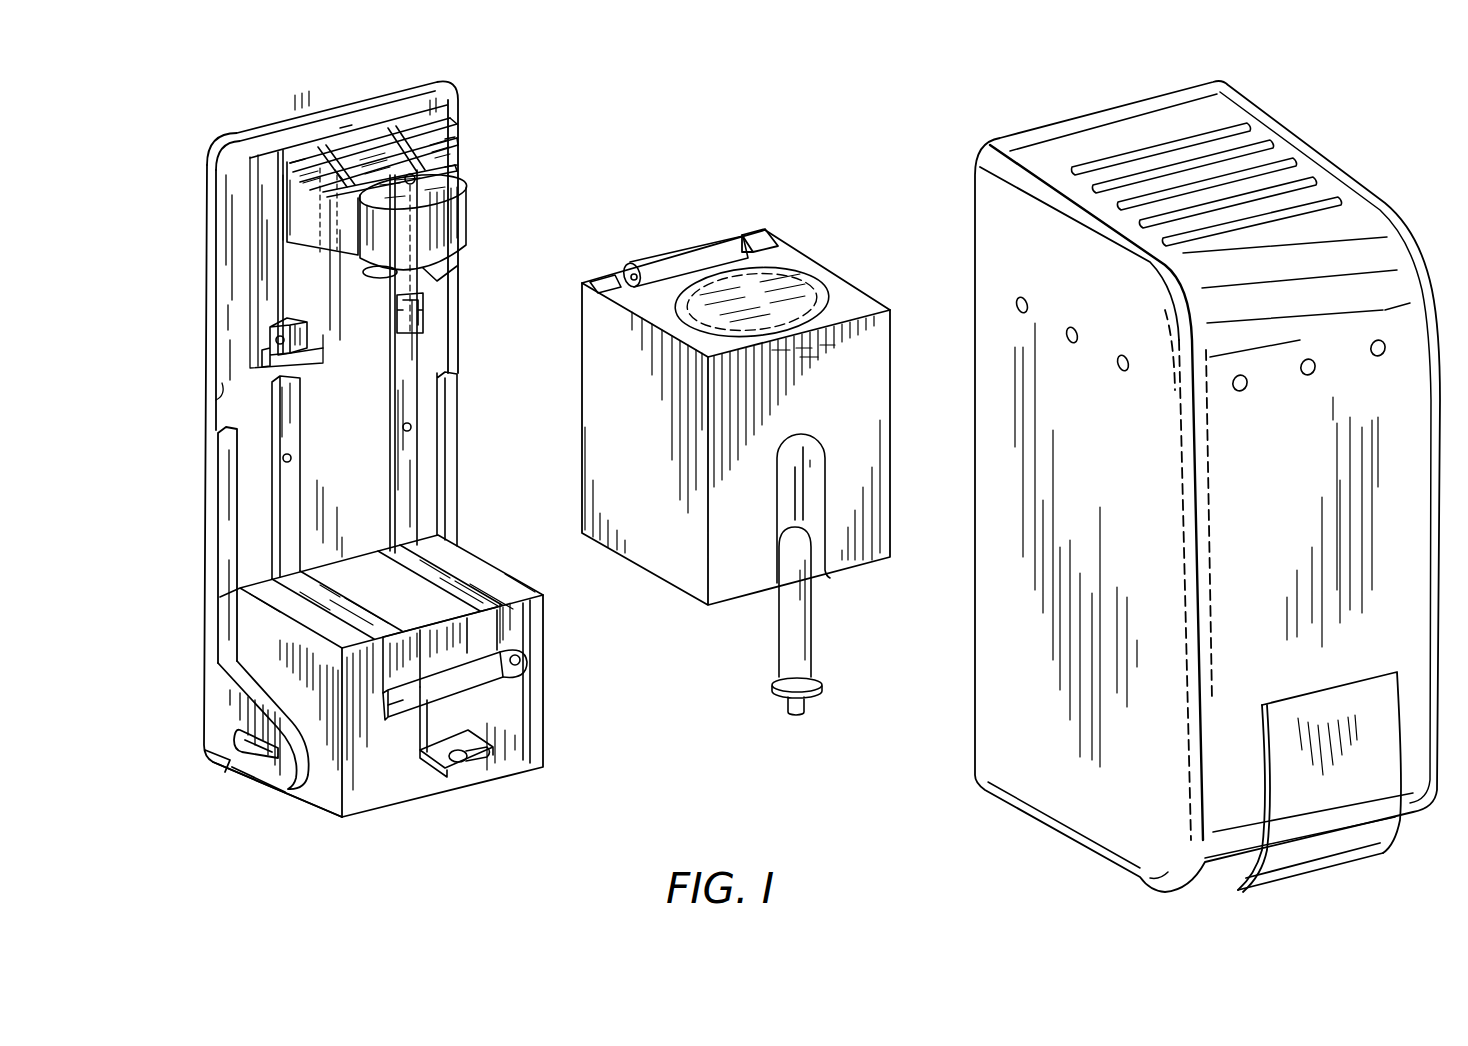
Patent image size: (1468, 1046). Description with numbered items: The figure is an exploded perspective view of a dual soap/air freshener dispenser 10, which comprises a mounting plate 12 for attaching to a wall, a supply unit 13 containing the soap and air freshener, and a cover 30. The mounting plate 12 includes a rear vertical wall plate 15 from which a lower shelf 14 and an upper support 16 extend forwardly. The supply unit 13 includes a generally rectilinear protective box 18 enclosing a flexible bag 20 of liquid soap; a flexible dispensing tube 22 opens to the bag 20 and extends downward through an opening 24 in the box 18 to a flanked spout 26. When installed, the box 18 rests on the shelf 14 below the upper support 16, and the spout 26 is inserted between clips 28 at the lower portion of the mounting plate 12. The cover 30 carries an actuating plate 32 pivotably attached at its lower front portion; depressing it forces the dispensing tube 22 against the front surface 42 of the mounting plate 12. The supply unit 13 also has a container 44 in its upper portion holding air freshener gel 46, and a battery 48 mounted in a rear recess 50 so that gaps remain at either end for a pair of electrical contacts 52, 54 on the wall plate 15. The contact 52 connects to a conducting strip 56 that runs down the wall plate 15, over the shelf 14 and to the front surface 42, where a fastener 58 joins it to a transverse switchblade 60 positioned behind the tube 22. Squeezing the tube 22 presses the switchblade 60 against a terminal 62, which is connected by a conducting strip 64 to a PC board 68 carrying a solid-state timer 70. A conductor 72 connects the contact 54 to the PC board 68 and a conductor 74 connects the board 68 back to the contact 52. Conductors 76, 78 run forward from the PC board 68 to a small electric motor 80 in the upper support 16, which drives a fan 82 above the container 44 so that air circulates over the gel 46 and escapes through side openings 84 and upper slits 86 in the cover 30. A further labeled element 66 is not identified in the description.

The dual soap/air freshener dispenser 10 is at (378, 870).
The mounting plate 12 is at (207, 497).
The supply unit 13 is at (811, 230).
The lower shelf 14 is at (363, 563).
The rear vertical wall plate 15 is at (222, 387).
The upper support 16 is at (392, 135).
The protective box 18 is at (577, 413).
The flexible bag 20 is at (795, 497).
The flexible dispensing tube 22 is at (790, 637).
The opening 24 is at (815, 473).
The flanked spout 26 is at (778, 690).
The clips 28 is at (490, 767).
The cover 30 is at (1396, 200).
The actuating plate 32 is at (1370, 812).
The front surface 42 is at (460, 717).
The container 44 is at (713, 317).
The gel 46 is at (712, 318).
The battery 48 is at (688, 250).
The rear recess 50 is at (620, 278).
The electrical contact 52 is at (423, 317).
The electrical contact 54 is at (293, 337).
The conducting strip 56 is at (390, 407).
The fastener 58 is at (527, 660).
The switchblade 60 is at (403, 713).
The terminal 62 is at (383, 683).
The conducting strip 64 is at (300, 483).
The wall 66 is at (340, 327).
The PC board 68 is at (347, 123).
The solid-state timer 70 is at (300, 142).
The conductor 72 is at (280, 270).
The conductor 74 is at (450, 136).
The conductor 76 is at (457, 160).
The conductor 78 is at (340, 178).
The electric motor 80 is at (467, 213).
The fan 82 is at (457, 277).
The side openings 84 is at (1120, 370).
The upper slits 86 is at (1290, 160).